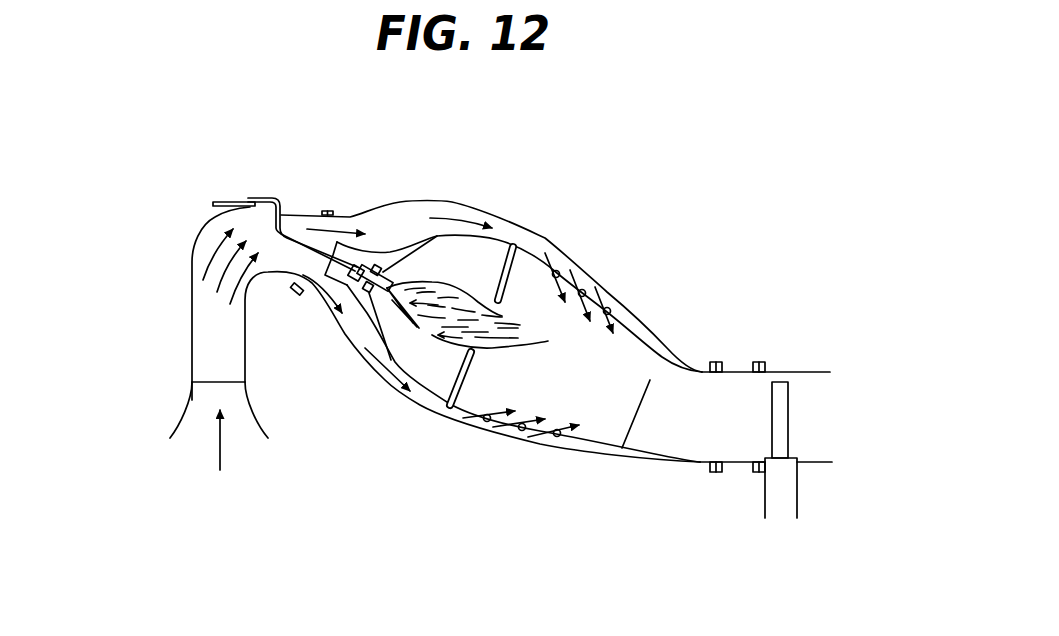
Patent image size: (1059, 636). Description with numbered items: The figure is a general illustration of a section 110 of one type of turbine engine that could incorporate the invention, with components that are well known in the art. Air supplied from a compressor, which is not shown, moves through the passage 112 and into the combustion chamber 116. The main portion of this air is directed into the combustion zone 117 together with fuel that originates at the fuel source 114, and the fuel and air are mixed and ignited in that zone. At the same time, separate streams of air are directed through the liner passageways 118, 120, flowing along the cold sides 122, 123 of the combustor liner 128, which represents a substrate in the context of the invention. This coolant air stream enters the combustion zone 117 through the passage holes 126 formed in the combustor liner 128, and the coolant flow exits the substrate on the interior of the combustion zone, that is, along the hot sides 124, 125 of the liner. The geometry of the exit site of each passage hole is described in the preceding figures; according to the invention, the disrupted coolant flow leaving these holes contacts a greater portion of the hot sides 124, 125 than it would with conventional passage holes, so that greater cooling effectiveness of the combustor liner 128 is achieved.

The section of turbine engine 110 is at (653, 163).
The passage 112 is at (210, 335).
The fuel source 114 is at (242, 201).
The combustion chamber 116 is at (420, 406).
The combustion zone 117 is at (523, 275).
The liner passageway 118 is at (500, 220).
The liner passageway 120 is at (450, 418).
The cold side of combustor liner 122 is at (624, 321).
The cold side of combustor liner 123 is at (582, 451).
The hot side of combustor liner 124 is at (636, 343).
The hot side of combustor liner 125 is at (606, 442).
The passage holes 126 is at (557, 271).
The combustor liner 128 is at (512, 233).